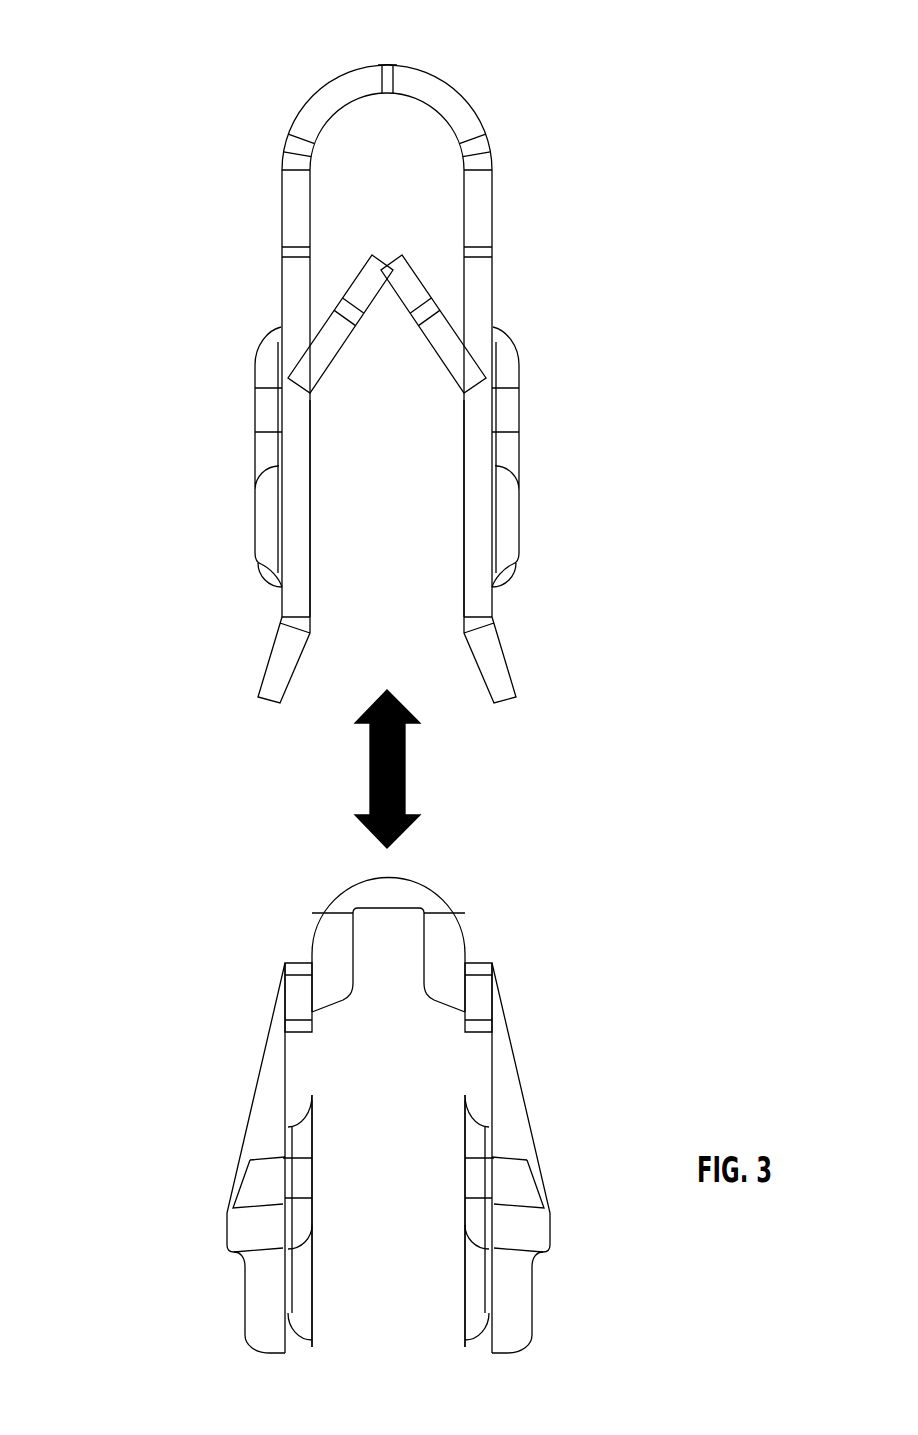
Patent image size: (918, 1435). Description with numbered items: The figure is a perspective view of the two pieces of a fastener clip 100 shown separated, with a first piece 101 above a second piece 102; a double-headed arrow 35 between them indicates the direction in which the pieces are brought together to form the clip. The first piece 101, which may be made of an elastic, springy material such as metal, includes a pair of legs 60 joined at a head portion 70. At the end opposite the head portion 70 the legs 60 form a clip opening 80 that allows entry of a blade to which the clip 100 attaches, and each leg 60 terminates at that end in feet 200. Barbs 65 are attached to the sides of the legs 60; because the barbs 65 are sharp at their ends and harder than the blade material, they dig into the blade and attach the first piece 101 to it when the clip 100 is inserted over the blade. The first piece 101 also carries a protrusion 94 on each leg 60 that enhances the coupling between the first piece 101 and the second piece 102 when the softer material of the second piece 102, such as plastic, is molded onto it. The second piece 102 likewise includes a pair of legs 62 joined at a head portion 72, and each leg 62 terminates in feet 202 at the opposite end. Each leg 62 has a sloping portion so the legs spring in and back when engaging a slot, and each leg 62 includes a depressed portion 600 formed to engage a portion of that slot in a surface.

The fastener clip 100 is at (687, 178).
The first piece 101 is at (140, 368).
The second piece 102 is at (160, 1079).
The head portion 70 is at (412, 87).
The head portion 72 is at (405, 893).
The barbs 65 is at (302, 288).
The protrusion 94 is at (267, 365).
The legs 60 is at (297, 508).
The feet 200 is at (275, 687).
The feet 202 is at (265, 1302).
The mating direction arrow 35 is at (678, 755).
The clip opening 80 is at (383, 642).
The legs 62 is at (240, 1175).
The depressed portion 600 is at (227, 1252).